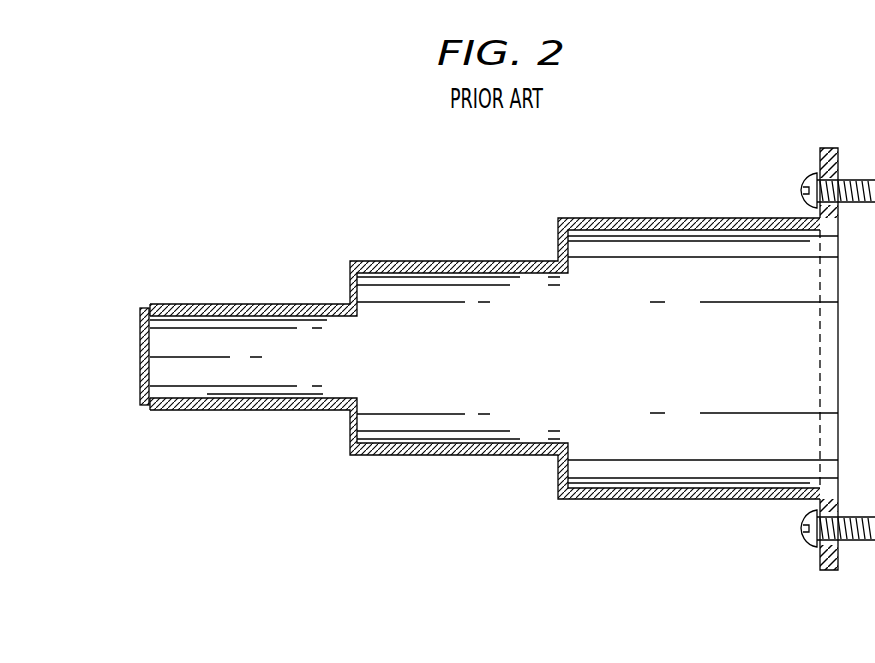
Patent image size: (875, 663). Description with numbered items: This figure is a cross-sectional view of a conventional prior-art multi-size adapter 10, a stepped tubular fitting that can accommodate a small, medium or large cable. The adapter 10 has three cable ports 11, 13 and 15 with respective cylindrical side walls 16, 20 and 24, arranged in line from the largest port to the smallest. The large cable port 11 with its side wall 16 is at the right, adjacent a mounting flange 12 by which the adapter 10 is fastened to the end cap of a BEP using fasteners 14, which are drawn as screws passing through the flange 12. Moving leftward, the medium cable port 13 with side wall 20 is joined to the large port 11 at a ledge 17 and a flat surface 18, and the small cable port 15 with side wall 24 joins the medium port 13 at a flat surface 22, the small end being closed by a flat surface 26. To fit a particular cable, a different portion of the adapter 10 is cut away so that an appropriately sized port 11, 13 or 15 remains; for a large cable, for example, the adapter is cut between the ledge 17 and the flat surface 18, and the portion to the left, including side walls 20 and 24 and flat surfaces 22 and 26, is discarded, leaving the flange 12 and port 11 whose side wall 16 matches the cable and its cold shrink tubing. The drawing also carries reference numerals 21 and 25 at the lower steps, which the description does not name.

The multi-size adapter 10 is at (482, 552).
The cable port 11 is at (691, 501).
The mounting flange 12 is at (820, 158).
The cable port 13 is at (477, 456).
The fasteners 14 is at (802, 185).
The cable port 15 is at (267, 411).
The cylindrical side wall 16 is at (620, 217).
The ledge 17 is at (567, 497).
The flat surface 18 is at (559, 242).
The cylindrical side wall 20 is at (418, 260).
The lower step shoulder 21 is at (358, 456).
The flat surface 22 is at (350, 278).
The cylindrical side wall 24 is at (237, 303).
The lower end corner 25 is at (152, 411).
The flat surface 26 is at (140, 328).